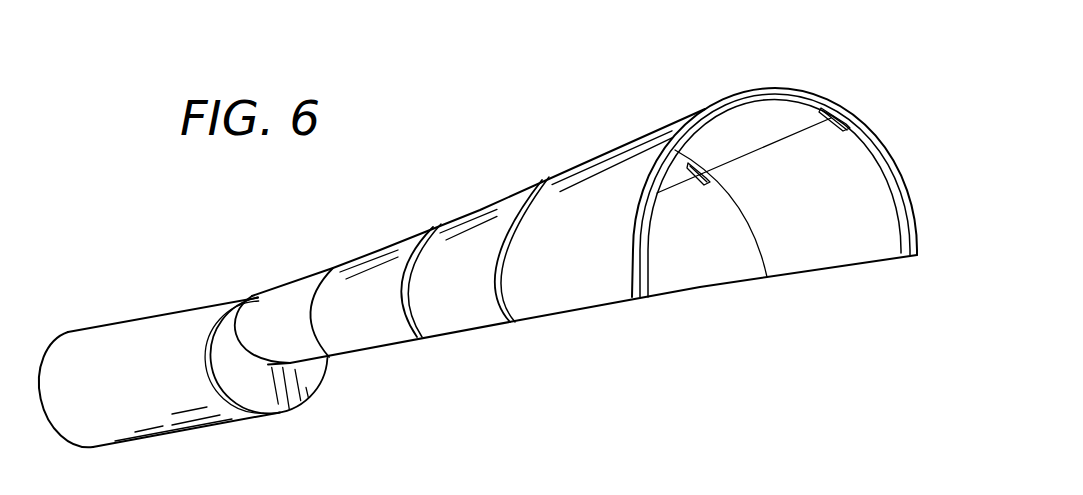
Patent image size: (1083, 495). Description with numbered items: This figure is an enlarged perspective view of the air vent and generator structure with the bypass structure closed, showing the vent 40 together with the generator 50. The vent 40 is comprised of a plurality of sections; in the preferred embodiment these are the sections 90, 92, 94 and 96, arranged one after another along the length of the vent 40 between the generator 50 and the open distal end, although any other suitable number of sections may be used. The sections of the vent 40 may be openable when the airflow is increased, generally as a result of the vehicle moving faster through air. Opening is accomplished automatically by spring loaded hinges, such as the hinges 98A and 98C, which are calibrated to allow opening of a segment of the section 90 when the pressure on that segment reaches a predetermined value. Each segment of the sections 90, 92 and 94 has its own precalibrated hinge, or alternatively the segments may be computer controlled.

The vent 40 is at (768, 82).
The generator 50 is at (174, 298).
The section 90 is at (632, 140).
The section 92 is at (488, 206).
The section 94 is at (390, 246).
The section 96 is at (298, 281).
The hinge 98A is at (676, 152).
The hinge 98C is at (835, 128).